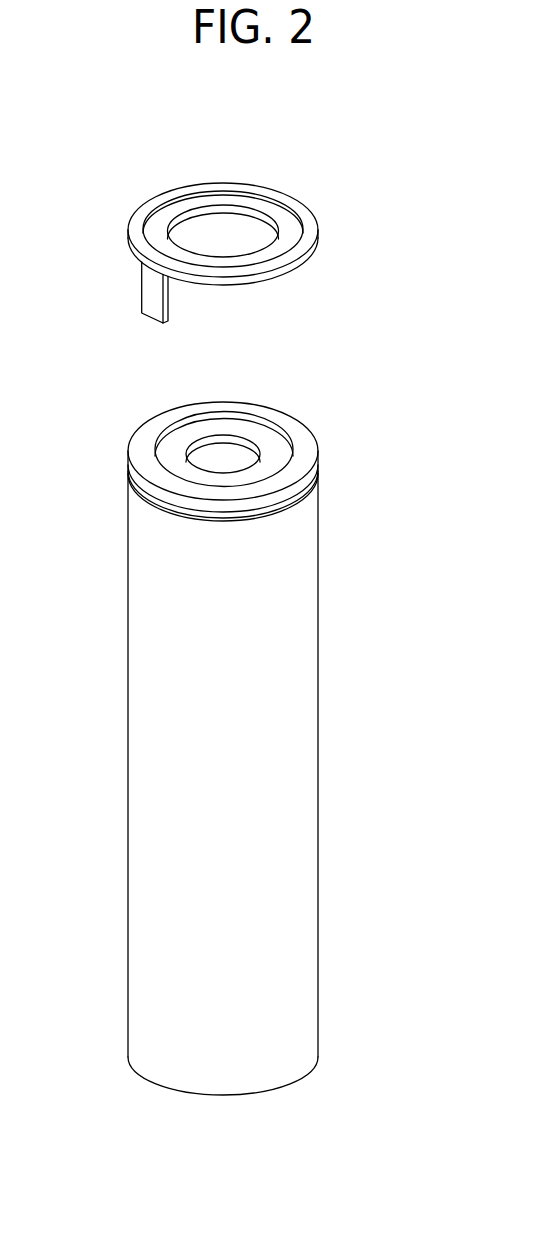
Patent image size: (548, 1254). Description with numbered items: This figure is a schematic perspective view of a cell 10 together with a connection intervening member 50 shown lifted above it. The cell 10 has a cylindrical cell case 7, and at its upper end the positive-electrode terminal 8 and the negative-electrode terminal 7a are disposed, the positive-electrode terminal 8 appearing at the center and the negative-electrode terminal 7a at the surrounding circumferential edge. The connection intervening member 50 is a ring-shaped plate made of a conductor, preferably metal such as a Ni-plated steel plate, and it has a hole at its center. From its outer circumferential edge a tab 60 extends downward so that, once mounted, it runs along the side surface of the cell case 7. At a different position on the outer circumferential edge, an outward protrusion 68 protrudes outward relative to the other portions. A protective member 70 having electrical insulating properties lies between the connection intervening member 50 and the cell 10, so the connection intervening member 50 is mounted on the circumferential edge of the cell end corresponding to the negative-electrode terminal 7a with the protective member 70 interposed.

The cell 10 is at (252, 714).
The cell case 7 is at (147, 645).
The negative-electrode terminal 7a is at (305, 453).
The positive-electrode terminal 8 is at (223, 453).
The outward protrusion 68 is at (217, 218).
The connection intervening member 50 is at (313, 220).
The protective member 70 is at (292, 232).
The tab 60 is at (153, 292).